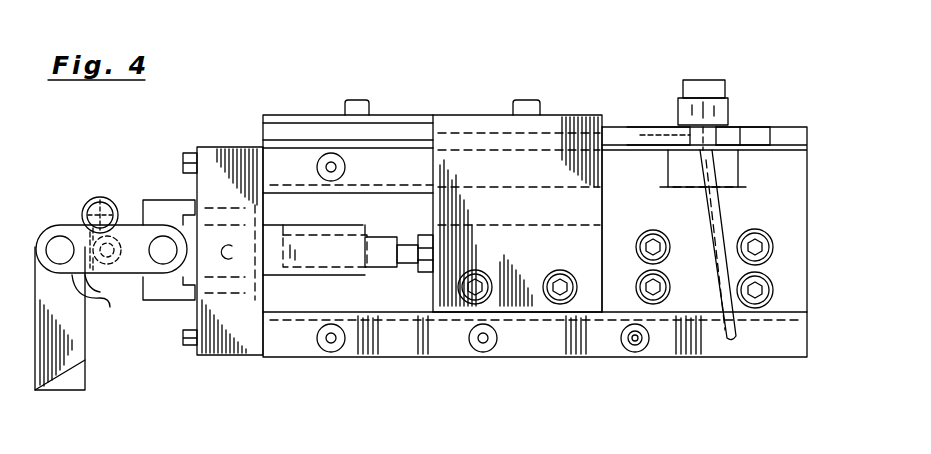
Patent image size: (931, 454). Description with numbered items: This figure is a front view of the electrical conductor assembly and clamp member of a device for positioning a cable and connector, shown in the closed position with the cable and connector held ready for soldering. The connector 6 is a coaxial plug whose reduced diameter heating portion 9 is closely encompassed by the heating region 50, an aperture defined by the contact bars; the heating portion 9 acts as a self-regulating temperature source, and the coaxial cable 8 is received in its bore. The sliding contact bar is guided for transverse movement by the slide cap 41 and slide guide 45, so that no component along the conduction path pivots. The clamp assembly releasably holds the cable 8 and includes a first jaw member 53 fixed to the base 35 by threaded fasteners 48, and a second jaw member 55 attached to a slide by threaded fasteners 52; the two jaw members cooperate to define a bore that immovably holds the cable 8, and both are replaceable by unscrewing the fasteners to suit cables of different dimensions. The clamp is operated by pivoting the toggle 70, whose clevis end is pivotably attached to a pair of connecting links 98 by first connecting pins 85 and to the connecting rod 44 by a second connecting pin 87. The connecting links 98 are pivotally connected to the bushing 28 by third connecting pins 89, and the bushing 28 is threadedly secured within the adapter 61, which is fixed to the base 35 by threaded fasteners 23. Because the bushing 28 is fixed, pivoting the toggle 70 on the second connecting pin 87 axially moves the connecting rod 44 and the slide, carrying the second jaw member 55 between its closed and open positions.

The connector 6 is at (726, 92).
The coaxial cable 8 is at (715, 235).
The heating portion 9 is at (690, 138).
The threaded fasteners 23 is at (183, 160).
The bushing 28 is at (153, 300).
The base 35 is at (378, 200).
The slide cap 41 is at (302, 115).
The connecting rod 44 is at (300, 273).
The slide guide 45 is at (570, 125).
The threaded fasteners 48 is at (758, 293).
The heating region 50 is at (740, 135).
The threaded fasteners 52 is at (648, 287).
The first jaw member 53 is at (727, 172).
The second jaw member 55 is at (684, 180).
The adapter 61 is at (195, 313).
The toggle 70 is at (55, 380).
The first connecting pins 85 is at (45, 240).
The second connecting pin 87 is at (100, 200).
The third connecting pins 89 is at (163, 245).
The connecting links 98 is at (101, 307).